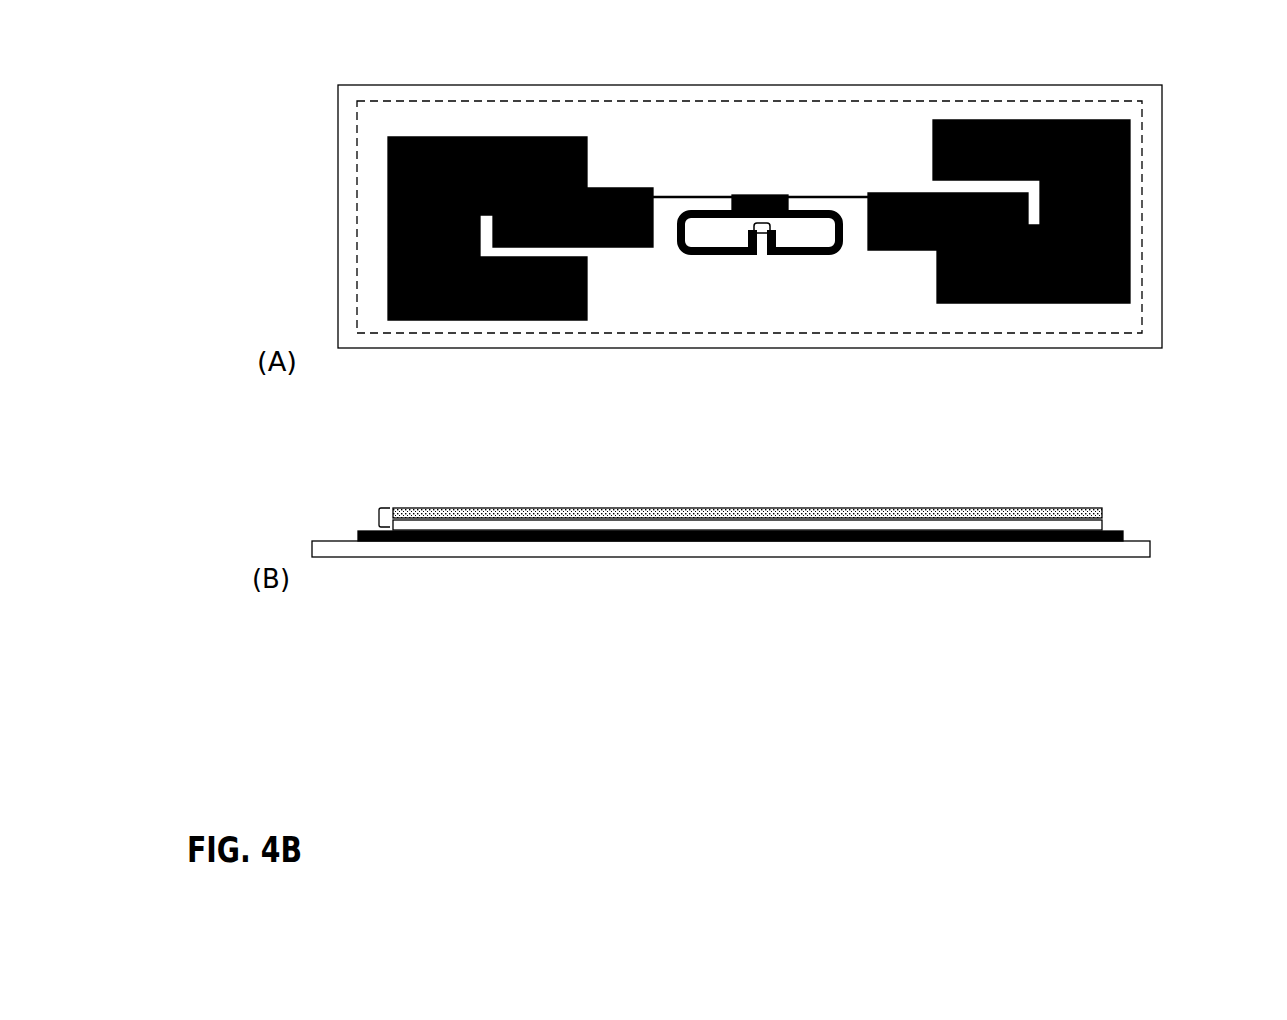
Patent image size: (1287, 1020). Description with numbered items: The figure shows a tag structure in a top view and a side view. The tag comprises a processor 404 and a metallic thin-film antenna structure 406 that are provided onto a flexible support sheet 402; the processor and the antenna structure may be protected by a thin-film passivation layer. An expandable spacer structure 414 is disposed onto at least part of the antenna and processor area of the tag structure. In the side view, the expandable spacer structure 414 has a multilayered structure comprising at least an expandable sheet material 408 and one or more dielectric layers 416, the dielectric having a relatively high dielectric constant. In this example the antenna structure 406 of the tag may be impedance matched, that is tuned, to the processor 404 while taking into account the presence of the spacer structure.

The flexible support sheet 402 is at (432, 342).
The processor 404 is at (738, 196).
The metallic thin-film antenna structure 406 is at (527, 320).
The expandable sheet material 408 is at (882, 513).
The expandable spacer structure 414 is at (745, 305).
The dielectric layer 416 is at (1102, 528).